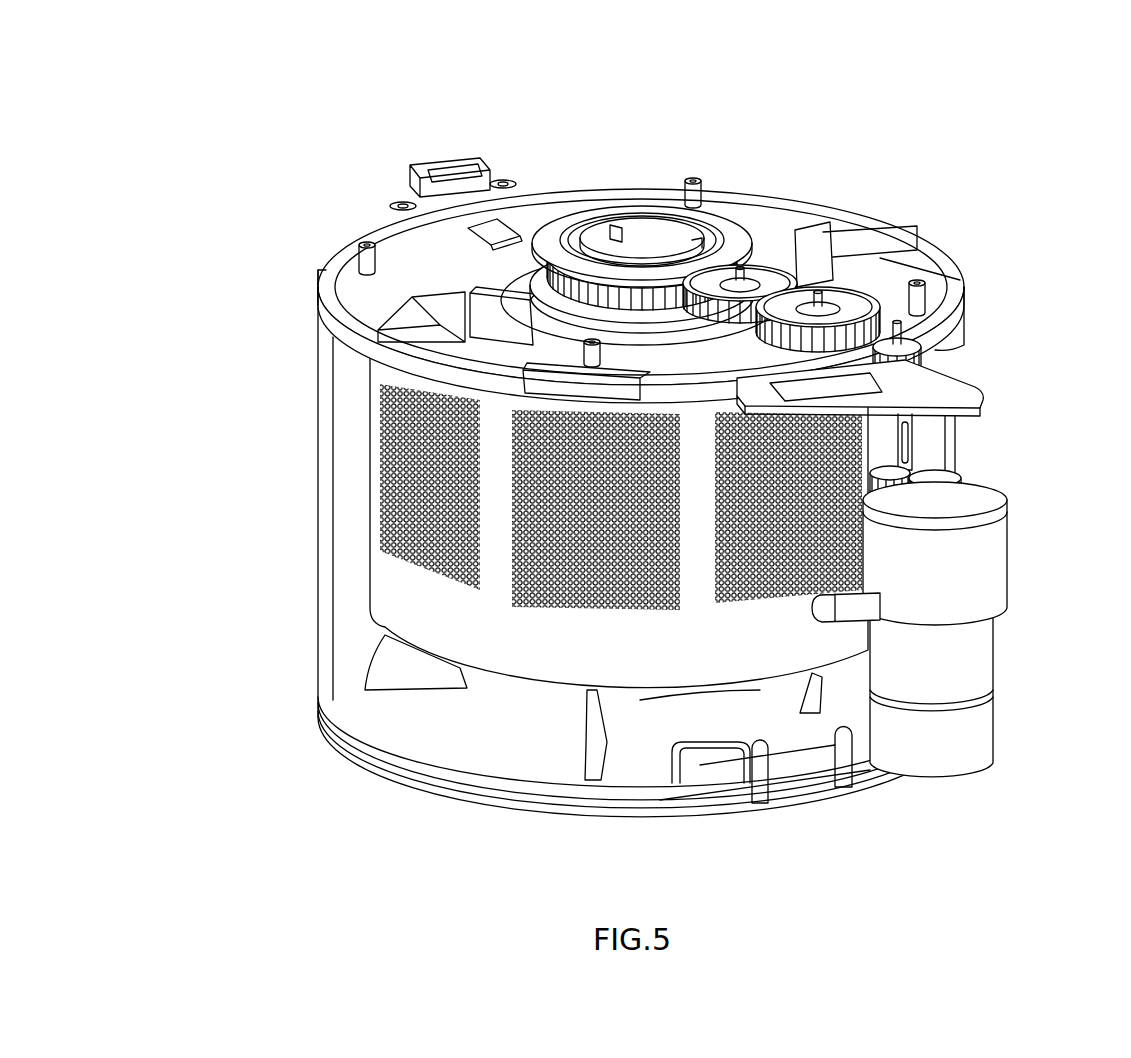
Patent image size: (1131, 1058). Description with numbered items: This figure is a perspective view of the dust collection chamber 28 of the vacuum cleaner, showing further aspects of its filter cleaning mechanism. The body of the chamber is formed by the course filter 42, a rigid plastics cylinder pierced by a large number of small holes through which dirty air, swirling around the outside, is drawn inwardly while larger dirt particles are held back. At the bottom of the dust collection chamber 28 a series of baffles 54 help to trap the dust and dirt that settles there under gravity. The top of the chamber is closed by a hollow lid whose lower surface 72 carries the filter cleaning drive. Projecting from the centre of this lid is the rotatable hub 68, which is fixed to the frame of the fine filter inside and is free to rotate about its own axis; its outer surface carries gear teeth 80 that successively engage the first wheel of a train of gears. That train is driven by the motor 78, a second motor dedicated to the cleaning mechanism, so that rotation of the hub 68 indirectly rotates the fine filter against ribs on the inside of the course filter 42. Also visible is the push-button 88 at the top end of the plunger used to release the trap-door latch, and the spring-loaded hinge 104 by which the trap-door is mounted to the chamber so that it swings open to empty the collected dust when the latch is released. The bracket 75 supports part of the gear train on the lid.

The dust collection chamber 28 is at (328, 602).
The course filter 42 is at (380, 495).
The baffles 54 is at (575, 748).
The rotatable hub 68 is at (552, 235).
The lower surface of the lid 72 is at (417, 290).
The gear train 75 is at (930, 352).
The motor 78 is at (948, 655).
The gear teeth 80 is at (517, 277).
The push-button 88 is at (447, 165).
The spring-loaded hinge 104 is at (797, 780).